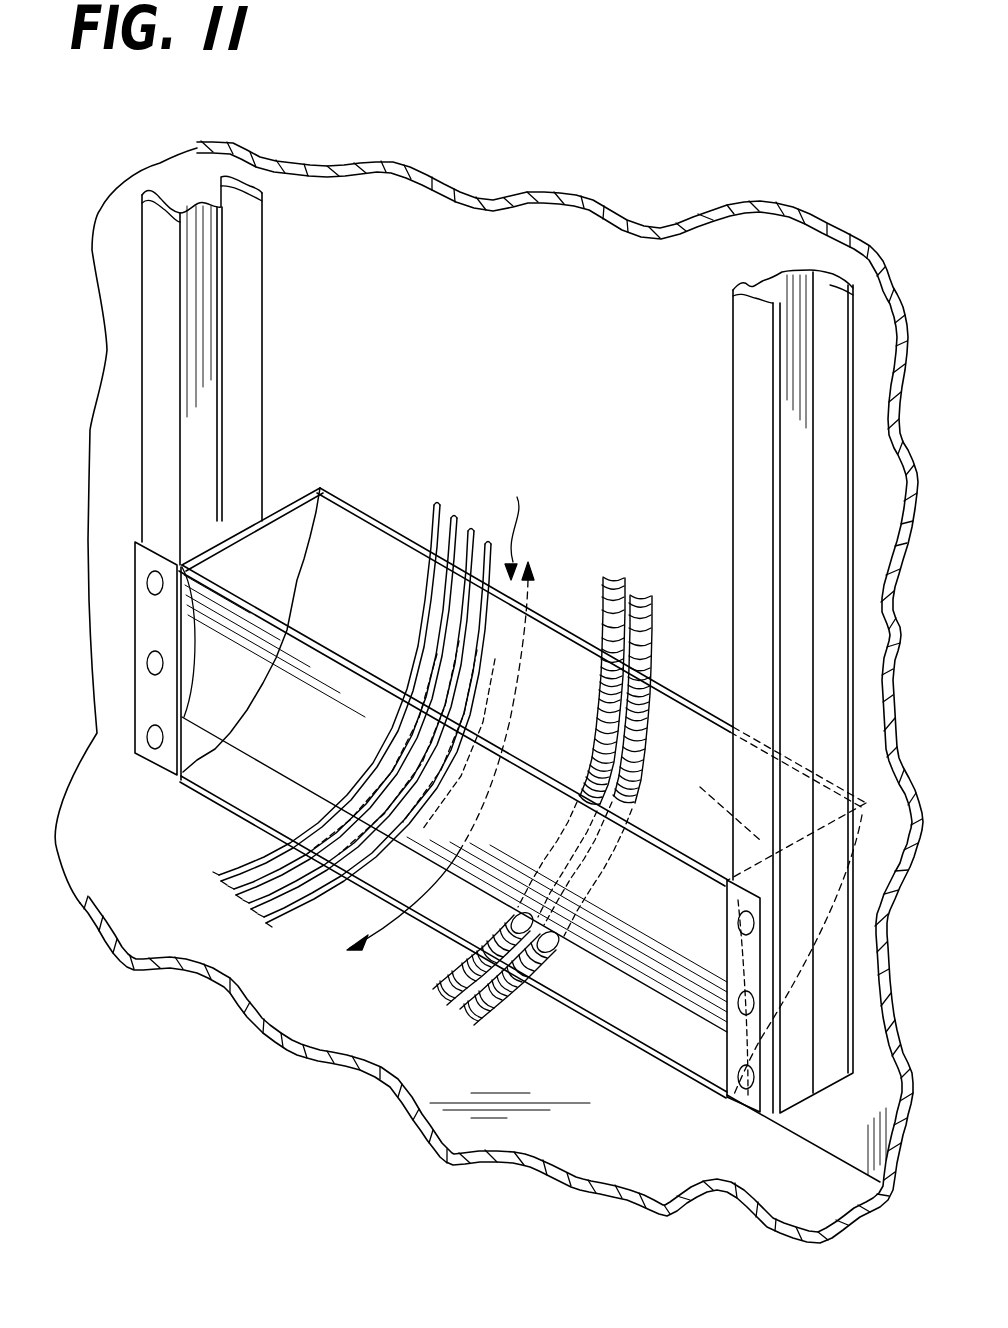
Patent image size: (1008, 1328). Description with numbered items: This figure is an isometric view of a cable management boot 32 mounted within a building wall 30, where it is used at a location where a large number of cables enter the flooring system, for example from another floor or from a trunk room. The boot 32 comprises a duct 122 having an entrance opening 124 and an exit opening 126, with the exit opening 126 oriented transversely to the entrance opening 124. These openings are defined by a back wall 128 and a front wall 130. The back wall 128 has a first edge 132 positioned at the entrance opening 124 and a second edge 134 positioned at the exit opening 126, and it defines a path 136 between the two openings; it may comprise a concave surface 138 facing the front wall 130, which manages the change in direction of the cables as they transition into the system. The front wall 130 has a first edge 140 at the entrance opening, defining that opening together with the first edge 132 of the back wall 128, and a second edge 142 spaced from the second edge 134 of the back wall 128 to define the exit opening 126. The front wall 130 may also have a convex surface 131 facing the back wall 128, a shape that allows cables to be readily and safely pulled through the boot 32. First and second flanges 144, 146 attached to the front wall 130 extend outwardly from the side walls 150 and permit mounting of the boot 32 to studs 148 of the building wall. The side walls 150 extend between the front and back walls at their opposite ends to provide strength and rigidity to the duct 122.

The building wall 30 is at (807, 1116).
The cable management boot 32 is at (518, 517).
The duct 122 is at (555, 640).
The entrance opening 124 is at (372, 523).
The exit opening 126 is at (442, 907).
The back wall 128 is at (683, 710).
The front wall 130 is at (351, 740).
The convex surface 131 is at (273, 608).
The first edge 132 is at (322, 473).
The second edge 134 is at (650, 1035).
The path 136 is at (370, 925).
The concave surface 138 is at (586, 735).
The first edge 140 is at (352, 670).
The second edge 142 is at (245, 812).
The first flange 144 is at (132, 625).
The second flange 146 is at (730, 1088).
The studs 148 is at (752, 525).
The side walls 150 is at (760, 912).